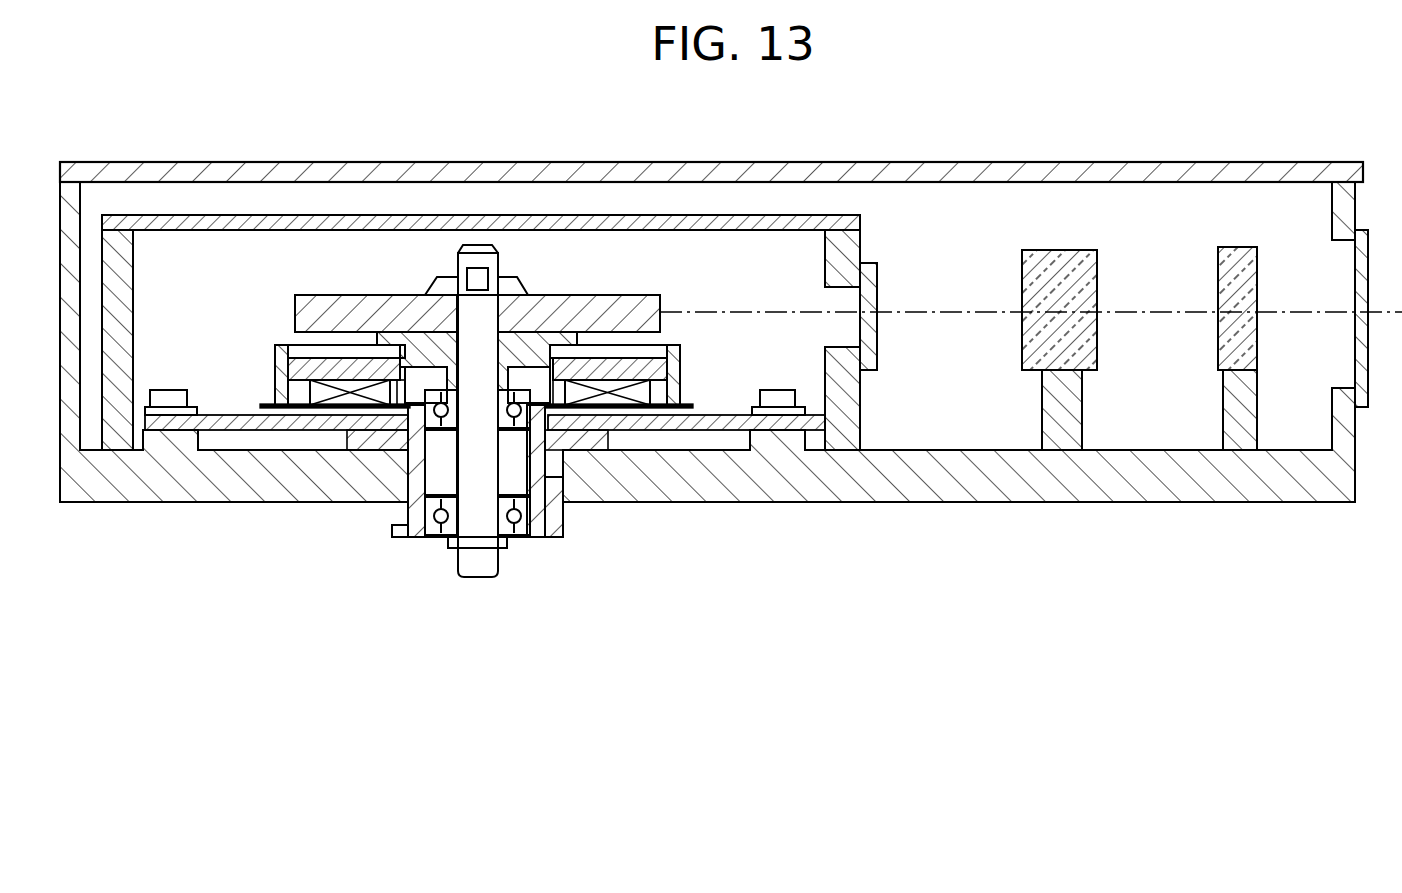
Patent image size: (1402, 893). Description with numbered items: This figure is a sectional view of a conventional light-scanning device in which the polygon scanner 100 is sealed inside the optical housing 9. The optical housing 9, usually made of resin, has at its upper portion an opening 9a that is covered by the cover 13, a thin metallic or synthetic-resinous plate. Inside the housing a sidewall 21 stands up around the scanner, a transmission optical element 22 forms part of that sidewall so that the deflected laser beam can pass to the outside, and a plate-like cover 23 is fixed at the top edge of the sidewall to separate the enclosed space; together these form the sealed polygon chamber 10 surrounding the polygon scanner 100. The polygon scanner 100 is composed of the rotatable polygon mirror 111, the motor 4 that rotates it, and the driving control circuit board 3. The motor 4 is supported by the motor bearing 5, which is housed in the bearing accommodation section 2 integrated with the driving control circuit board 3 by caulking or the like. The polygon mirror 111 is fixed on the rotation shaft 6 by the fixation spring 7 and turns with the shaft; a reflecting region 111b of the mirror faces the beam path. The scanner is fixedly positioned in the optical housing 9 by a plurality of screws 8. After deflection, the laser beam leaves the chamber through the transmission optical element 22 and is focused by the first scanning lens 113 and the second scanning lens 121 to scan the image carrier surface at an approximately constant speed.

The polygon scanner 100 is at (605, 250).
The optical housing 9 is at (876, 493).
The opening 9a is at (83, 196).
The cover 13 is at (765, 162).
The sealed polygon chamber 10 is at (400, 243).
The sidewall 21 is at (519, 283).
The plate-like cover 23 is at (823, 217).
The transmission optical element 22 is at (877, 352).
The first scanning lens 113 is at (1065, 250).
The second scanning lens 121 is at (1248, 250).
The bearing accommodation section 2 is at (570, 445).
The motor 4 is at (240, 362).
The screws 8 is at (155, 392).
The driving control circuit board 3 is at (708, 414).
The motor bearing 5 is at (435, 467).
The polygon mirror 111 is at (475, 334).
The mirror reflecting portion 111b is at (655, 313).
The fixation spring 7 is at (505, 285).
The rotation shaft 6 is at (460, 555).